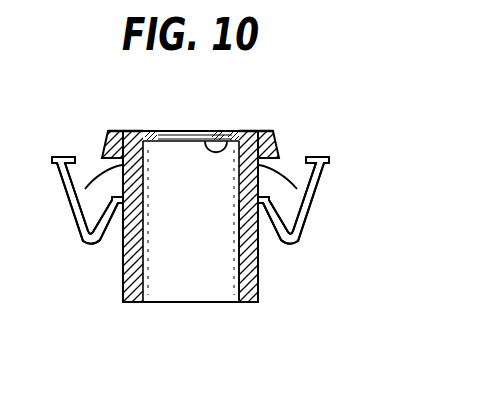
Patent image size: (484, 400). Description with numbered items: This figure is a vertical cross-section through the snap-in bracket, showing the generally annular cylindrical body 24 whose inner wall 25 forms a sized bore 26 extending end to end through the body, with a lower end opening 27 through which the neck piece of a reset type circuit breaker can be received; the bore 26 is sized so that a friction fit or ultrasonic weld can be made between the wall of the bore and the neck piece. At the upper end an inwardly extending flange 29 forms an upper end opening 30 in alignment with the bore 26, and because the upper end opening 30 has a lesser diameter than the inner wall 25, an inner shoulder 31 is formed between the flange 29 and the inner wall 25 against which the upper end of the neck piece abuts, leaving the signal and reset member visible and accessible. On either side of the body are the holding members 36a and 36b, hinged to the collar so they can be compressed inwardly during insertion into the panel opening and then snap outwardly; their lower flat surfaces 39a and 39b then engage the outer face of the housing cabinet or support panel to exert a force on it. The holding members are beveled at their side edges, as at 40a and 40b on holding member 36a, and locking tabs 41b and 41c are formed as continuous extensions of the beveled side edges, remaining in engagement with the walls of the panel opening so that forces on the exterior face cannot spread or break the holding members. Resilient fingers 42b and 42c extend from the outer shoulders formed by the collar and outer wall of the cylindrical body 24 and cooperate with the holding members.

The cylindrical body 24 is at (124, 283).
The inner wall 25 is at (236, 250).
The bore 26 is at (201, 243).
The lower end opening 27 is at (240, 281).
The flange 29 is at (147, 130).
The upper end opening 30 is at (171, 131).
The inner shoulder 31 is at (217, 131).
The holding member 36a is at (113, 131).
The holding member 36b is at (262, 130).
The lower flat surface 39a is at (106, 161).
The lower flat surface 39b is at (280, 161).
The beveled side edge 40a is at (125, 131).
The beveled side edge 40b is at (258, 131).
The locking tab 41b is at (87, 201).
The locking tab 41c is at (300, 207).
The resilient finger 42b is at (76, 229).
The resilient finger 42c is at (303, 249).